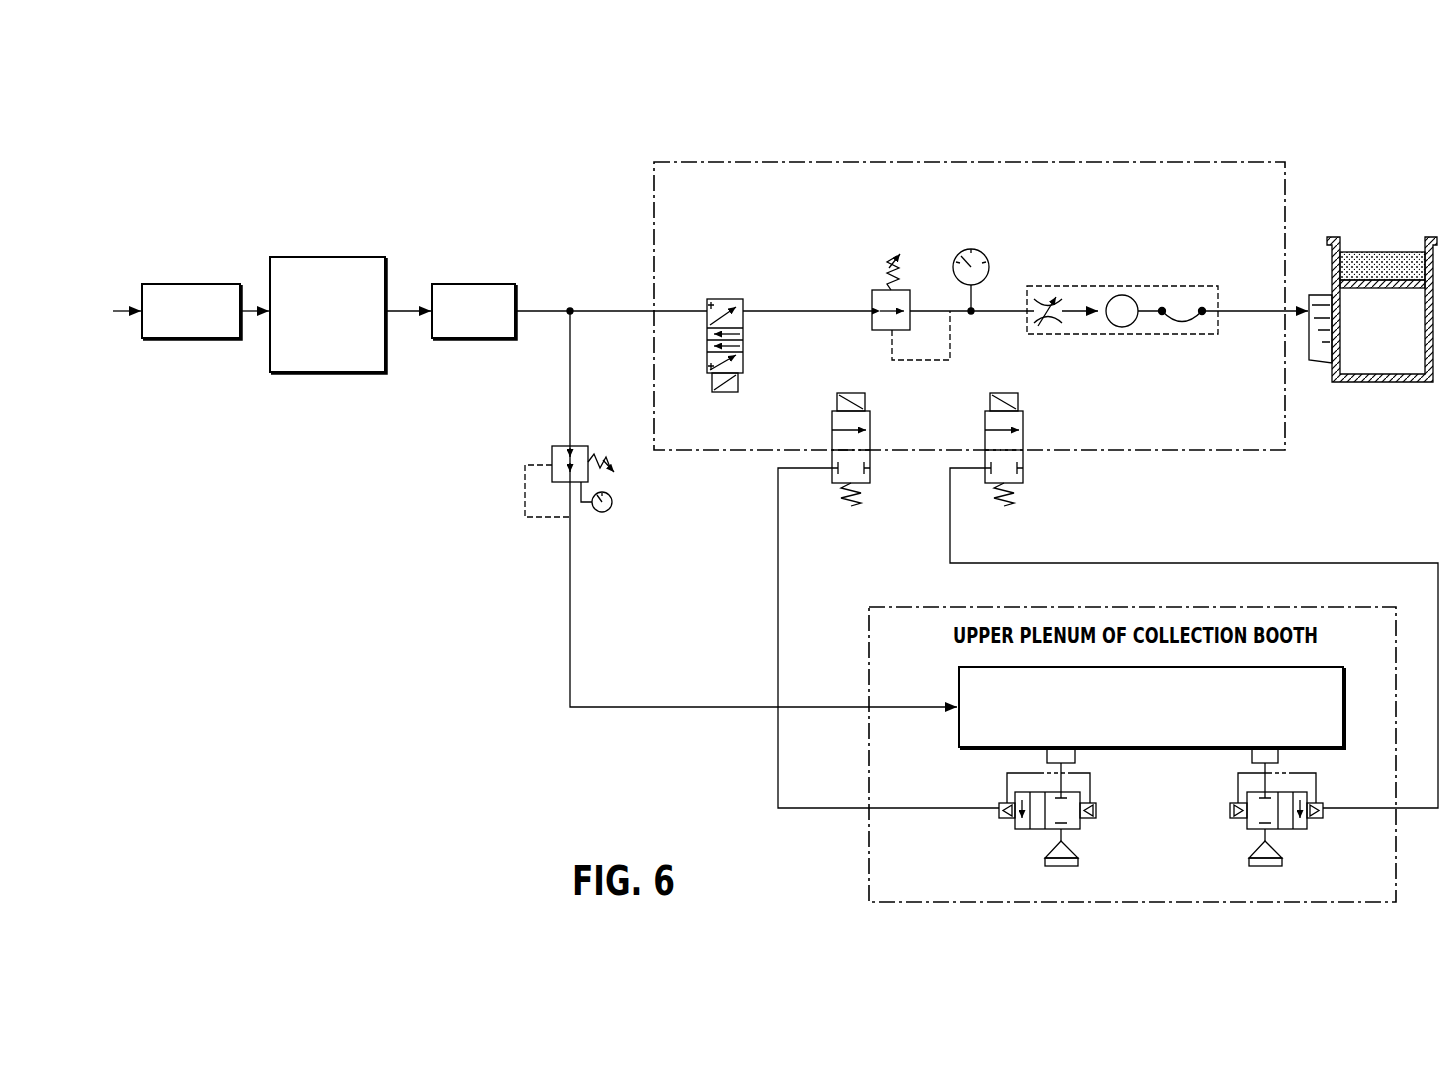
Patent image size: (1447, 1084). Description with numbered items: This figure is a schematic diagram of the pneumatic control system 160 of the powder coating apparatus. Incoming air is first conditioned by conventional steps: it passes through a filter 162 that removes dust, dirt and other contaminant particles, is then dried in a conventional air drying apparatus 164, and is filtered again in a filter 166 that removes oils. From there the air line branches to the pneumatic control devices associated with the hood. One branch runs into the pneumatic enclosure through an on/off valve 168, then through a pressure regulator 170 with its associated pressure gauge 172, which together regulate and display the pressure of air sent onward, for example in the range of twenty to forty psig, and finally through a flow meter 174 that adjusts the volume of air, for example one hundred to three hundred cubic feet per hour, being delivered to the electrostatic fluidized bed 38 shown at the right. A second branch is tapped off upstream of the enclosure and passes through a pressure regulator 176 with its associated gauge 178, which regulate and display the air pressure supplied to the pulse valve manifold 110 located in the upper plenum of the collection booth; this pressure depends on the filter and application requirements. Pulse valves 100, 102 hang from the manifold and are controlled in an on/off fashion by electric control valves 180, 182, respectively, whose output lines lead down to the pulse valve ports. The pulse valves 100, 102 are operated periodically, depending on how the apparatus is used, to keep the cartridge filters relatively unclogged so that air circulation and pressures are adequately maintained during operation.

The fluidized bed 38 is at (1383, 229).
The pulse valve 100 is at (1080, 790).
The pulse valve 102 is at (1246, 830).
The pulse valve manifold 110 is at (1319, 716).
The pneumatic control system 160 is at (952, 112).
The filter 162 is at (175, 284).
The air drying apparatus 164 is at (313, 257).
The filter 166 is at (460, 284).
The on/off valve 168 is at (743, 350).
The pressure regulator 170 is at (872, 296).
The pressure gauge 172 is at (989, 259).
The flow meter 174 is at (1118, 286).
The pressure regulator 176 is at (552, 446).
The gauge 178 is at (609, 509).
The electric control valve 180 is at (866, 413).
The electric control valve 182 is at (1019, 413).